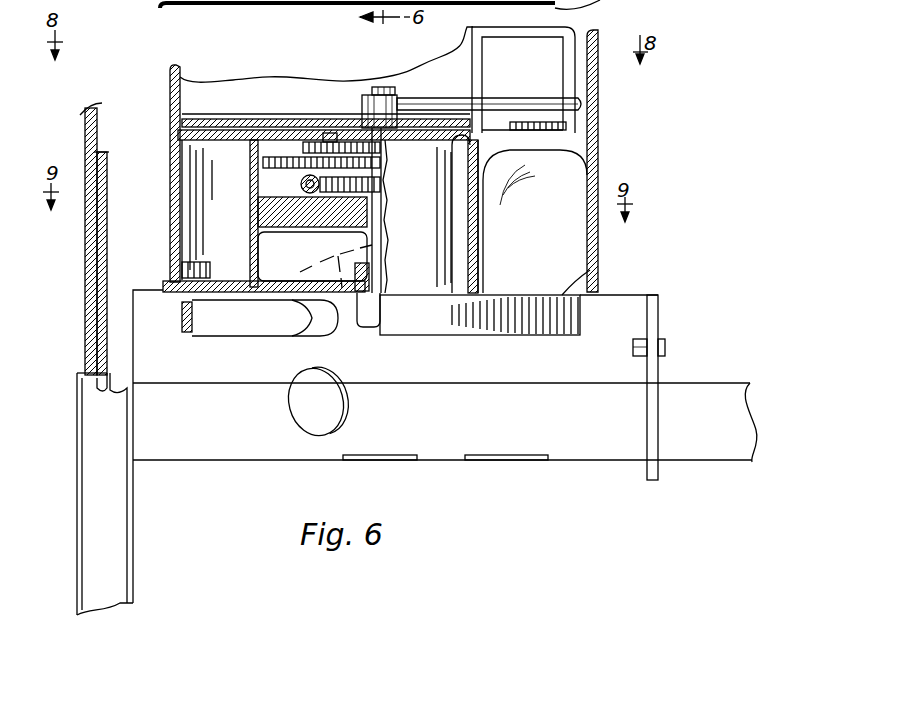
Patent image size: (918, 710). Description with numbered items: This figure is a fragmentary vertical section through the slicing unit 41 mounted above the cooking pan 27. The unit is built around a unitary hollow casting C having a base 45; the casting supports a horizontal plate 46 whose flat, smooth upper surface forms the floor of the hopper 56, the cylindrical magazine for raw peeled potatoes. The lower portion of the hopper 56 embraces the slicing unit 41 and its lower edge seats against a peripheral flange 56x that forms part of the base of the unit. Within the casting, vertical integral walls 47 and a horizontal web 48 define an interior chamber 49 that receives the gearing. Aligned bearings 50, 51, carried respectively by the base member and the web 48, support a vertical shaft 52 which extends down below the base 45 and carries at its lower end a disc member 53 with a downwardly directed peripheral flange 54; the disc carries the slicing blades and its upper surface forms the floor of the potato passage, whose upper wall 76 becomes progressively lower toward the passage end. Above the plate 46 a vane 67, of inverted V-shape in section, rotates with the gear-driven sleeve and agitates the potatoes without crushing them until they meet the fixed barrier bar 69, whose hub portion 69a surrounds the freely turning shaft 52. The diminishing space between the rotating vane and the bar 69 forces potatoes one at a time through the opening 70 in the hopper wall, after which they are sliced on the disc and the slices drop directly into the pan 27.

The slicing unit 41 is at (180, 55).
The horizontal plate 46 is at (213, 120).
The interior chamber 49 is at (278, 140).
The hub portion 69a is at (370, 96).
The fixed barrier bar 69 is at (548, 105).
The opening 70 is at (578, 30).
The vane 67 is at (482, 112).
The hopper 56 is at (600, 108).
The peripheral flange 56x is at (165, 282).
The vertical walls 47 is at (252, 190).
The horizontal web 48 is at (258, 215).
The base 45 is at (306, 280).
The bearing 51 is at (364, 216).
The vertical shaft 52 is at (372, 254).
The bearing 50 is at (352, 265).
The hollow casting C is at (481, 246).
The disc member 53 is at (596, 266).
The peripheral flange 54 is at (180, 328).
The cooking pan 27 is at (205, 393).
The upper wall 76 is at (341, 296).